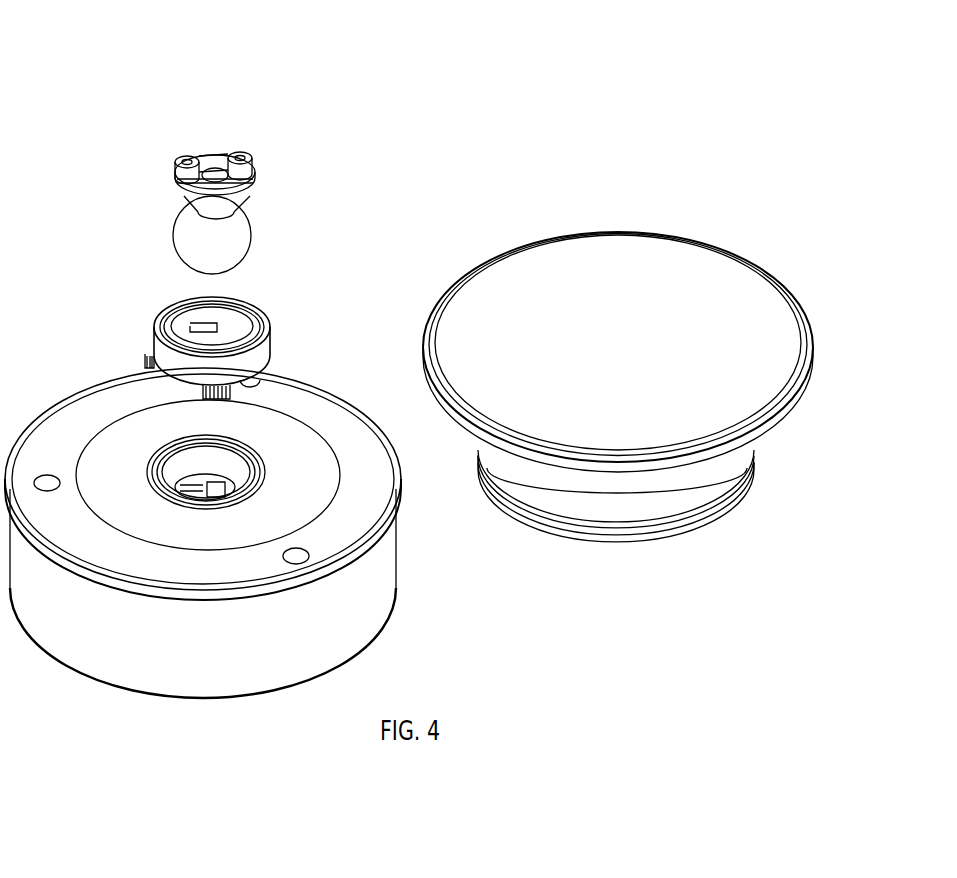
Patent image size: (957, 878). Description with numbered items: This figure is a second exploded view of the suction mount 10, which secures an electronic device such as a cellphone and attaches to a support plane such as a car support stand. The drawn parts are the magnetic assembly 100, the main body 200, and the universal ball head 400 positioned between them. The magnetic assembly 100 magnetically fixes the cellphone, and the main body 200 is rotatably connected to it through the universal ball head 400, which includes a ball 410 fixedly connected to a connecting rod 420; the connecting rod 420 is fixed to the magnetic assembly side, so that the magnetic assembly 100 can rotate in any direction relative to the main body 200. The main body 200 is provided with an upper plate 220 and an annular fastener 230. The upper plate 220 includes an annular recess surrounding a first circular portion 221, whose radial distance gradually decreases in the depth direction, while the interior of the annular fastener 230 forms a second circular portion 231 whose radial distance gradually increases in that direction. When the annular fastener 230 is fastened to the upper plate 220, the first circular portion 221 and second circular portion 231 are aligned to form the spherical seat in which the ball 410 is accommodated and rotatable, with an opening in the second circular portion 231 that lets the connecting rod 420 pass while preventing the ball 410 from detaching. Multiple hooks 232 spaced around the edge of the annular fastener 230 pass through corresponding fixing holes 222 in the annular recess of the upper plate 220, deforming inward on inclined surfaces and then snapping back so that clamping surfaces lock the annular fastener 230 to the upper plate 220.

The suction mount 10 is at (100, 76).
The magnetic assembly 100 is at (600, 228).
The main body 200 is at (370, 420).
The upper plate 220 is at (307, 505).
The first circular portion 221 is at (172, 474).
The fixing hole 222 is at (271, 476).
The annular fastener 230 is at (264, 331).
The second circular portion 231 is at (169, 327).
The hook 232 is at (149, 364).
The universal ball head 400 is at (326, 172).
The ball 410 is at (240, 243).
The connecting rod 420 is at (237, 207).